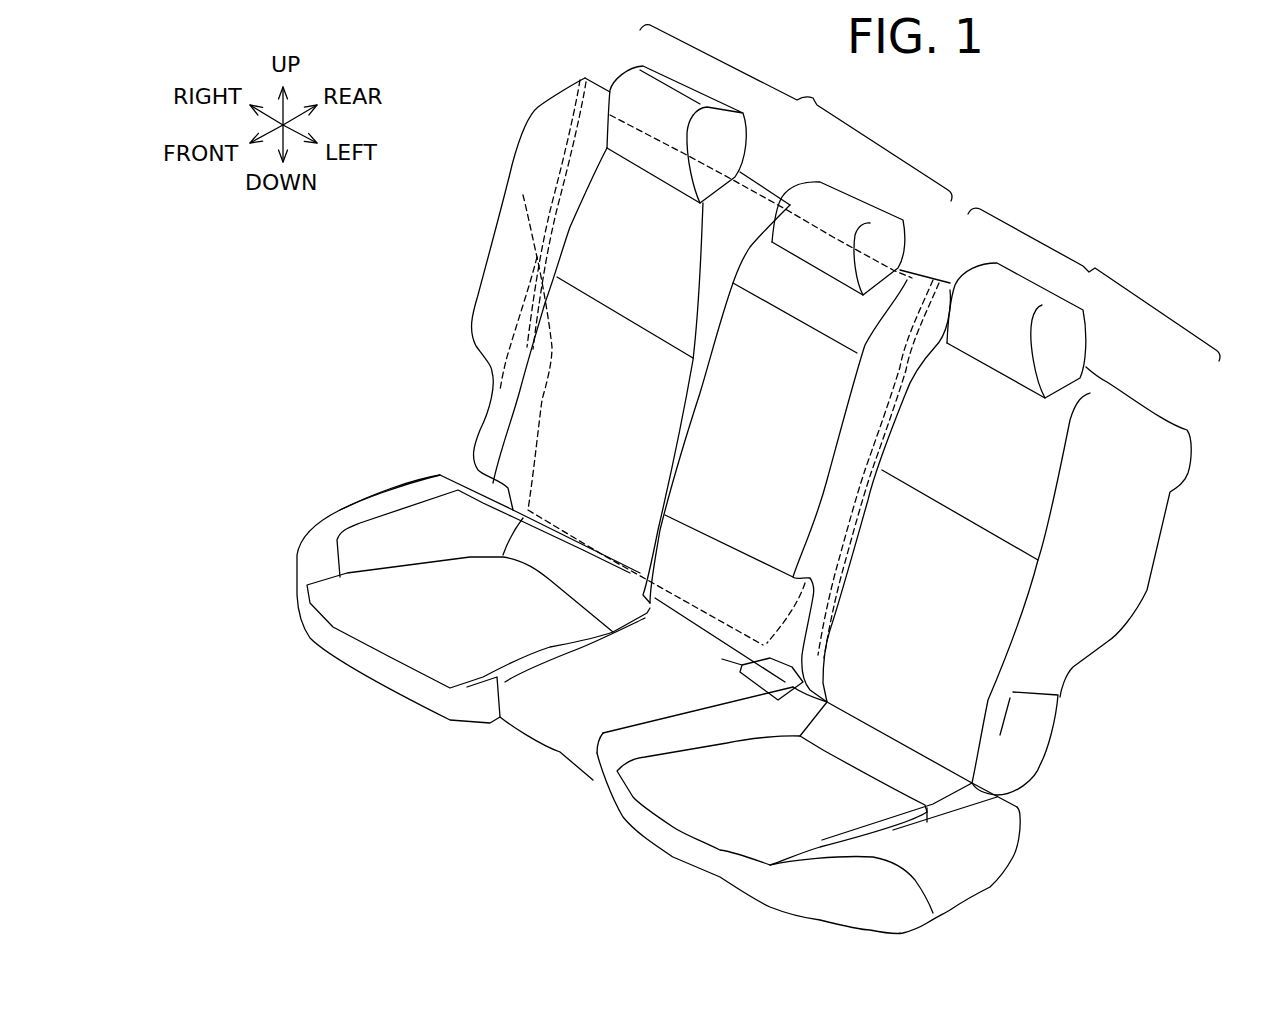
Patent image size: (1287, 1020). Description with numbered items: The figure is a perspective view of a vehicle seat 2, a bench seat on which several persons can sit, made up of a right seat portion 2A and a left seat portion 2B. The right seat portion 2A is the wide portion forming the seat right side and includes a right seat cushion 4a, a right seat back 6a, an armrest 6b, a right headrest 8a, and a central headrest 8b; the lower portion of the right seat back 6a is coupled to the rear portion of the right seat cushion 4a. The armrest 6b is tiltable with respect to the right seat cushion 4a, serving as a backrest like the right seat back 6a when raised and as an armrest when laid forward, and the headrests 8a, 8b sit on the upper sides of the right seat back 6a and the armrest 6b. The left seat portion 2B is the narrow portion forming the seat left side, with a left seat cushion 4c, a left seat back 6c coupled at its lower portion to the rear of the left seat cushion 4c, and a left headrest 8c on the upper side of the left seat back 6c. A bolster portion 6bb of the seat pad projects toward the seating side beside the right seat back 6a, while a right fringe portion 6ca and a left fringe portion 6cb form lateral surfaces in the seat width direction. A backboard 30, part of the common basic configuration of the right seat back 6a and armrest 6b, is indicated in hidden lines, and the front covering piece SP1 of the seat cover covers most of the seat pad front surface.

The vehicle seat 2 is at (1054, 131).
The right seat portion 2A is at (796, 113).
The left seat portion 2B is at (1094, 284).
The right seat cushion 4a is at (333, 508).
The left seat cushion 4c is at (1028, 836).
The right seat back 6a is at (497, 217).
The armrest 6b is at (679, 463).
The left seat back 6c is at (1161, 560).
The bolster portion 6bb is at (544, 315).
The right fringe portion 6ca is at (523, 195).
The left fringe portion 6cb is at (863, 421).
The right headrest 8a is at (620, 76).
The central headrest 8b is at (874, 193).
The left headrest 8c is at (1091, 348).
The backboard 30 is at (557, 141).
The front covering piece SP1 is at (567, 423).